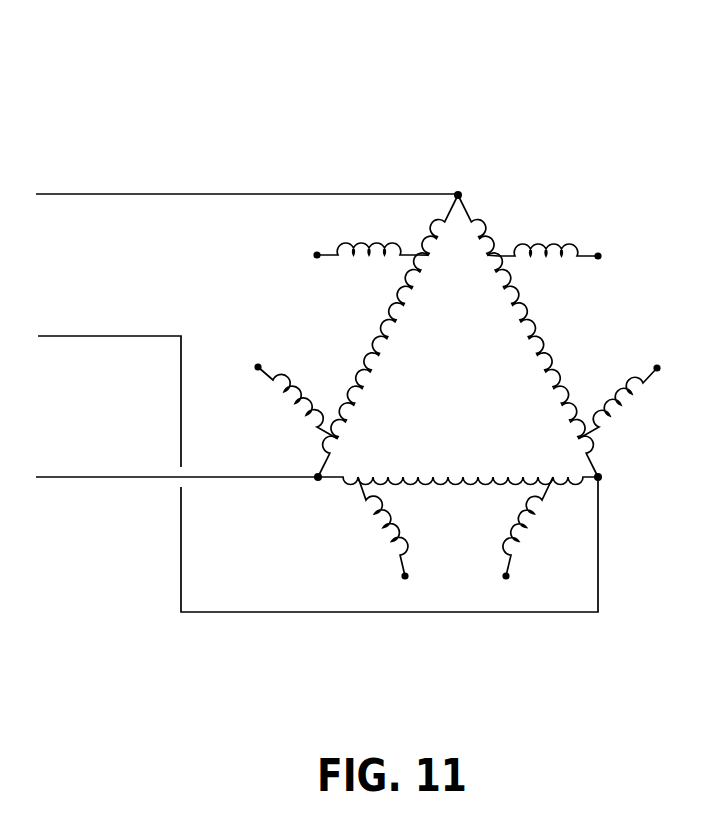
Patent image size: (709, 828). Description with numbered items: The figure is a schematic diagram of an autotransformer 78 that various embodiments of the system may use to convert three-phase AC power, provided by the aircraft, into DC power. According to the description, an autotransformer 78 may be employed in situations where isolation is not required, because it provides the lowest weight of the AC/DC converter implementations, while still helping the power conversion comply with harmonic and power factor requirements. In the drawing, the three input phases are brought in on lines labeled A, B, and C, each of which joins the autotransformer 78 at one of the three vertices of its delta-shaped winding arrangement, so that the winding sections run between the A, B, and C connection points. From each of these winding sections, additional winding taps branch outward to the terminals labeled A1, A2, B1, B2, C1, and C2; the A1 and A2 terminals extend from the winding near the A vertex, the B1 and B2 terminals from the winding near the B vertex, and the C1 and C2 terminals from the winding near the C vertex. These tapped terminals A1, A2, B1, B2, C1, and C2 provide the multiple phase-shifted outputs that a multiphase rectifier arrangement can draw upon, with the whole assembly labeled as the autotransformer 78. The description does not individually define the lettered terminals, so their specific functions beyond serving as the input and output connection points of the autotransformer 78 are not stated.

The autotransformer 78 is at (377, 127).
The phase A input line A is at (232, 194).
The phase B input line B is at (302, 469).
The phase C input line C is at (162, 481).
The terminal A' A1 is at (554, 255).
The terminal A'' A2 is at (360, 254).
The terminal B' B1 is at (518, 537).
The terminal B'' B2 is at (628, 389).
The terminal C' C1 is at (293, 389).
The terminal C'' C2 is at (395, 537).